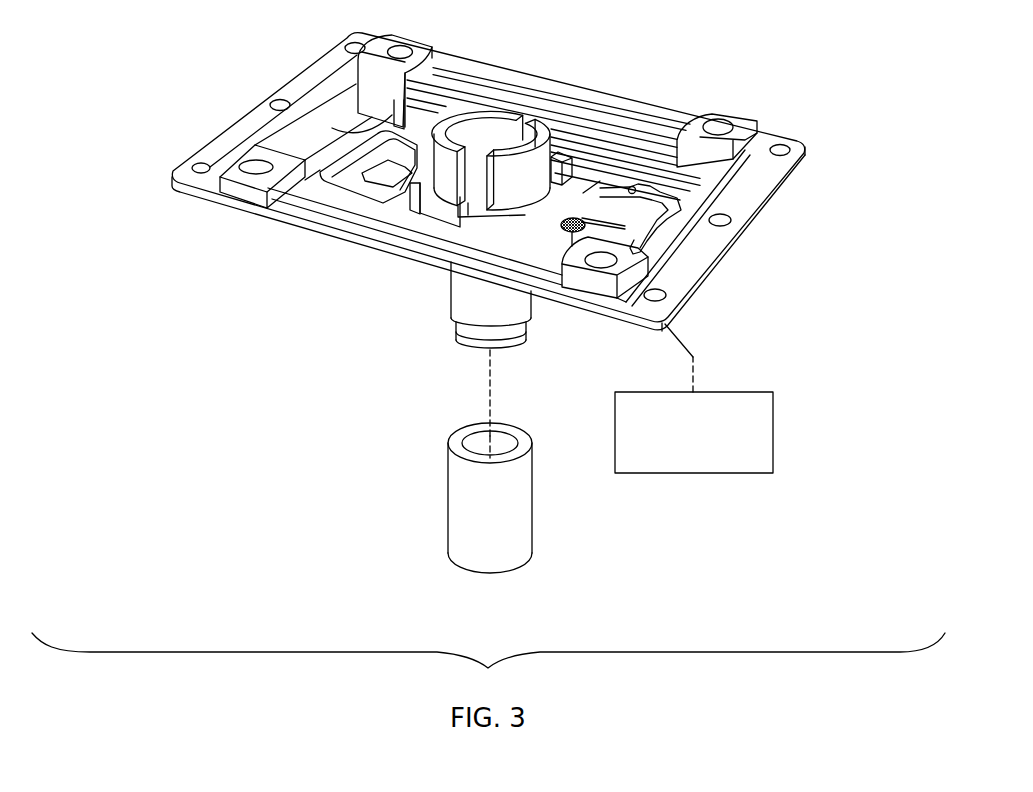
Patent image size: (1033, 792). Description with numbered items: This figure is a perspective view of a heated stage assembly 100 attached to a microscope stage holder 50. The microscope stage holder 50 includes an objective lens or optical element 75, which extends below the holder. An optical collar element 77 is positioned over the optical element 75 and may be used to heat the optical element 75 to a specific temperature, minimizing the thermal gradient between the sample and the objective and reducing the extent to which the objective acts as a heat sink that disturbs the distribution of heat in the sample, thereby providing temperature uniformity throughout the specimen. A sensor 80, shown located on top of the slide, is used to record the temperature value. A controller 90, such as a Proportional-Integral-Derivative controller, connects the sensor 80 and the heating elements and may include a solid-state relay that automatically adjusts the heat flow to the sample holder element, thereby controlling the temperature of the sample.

The microscope stage holder 50 is at (670, 269).
The optical element 75 is at (472, 307).
The optical collar element 77 is at (462, 490).
The sensor 80 is at (577, 217).
The controller 90 is at (775, 443).
The heated stage assembly 100 is at (632, 187).